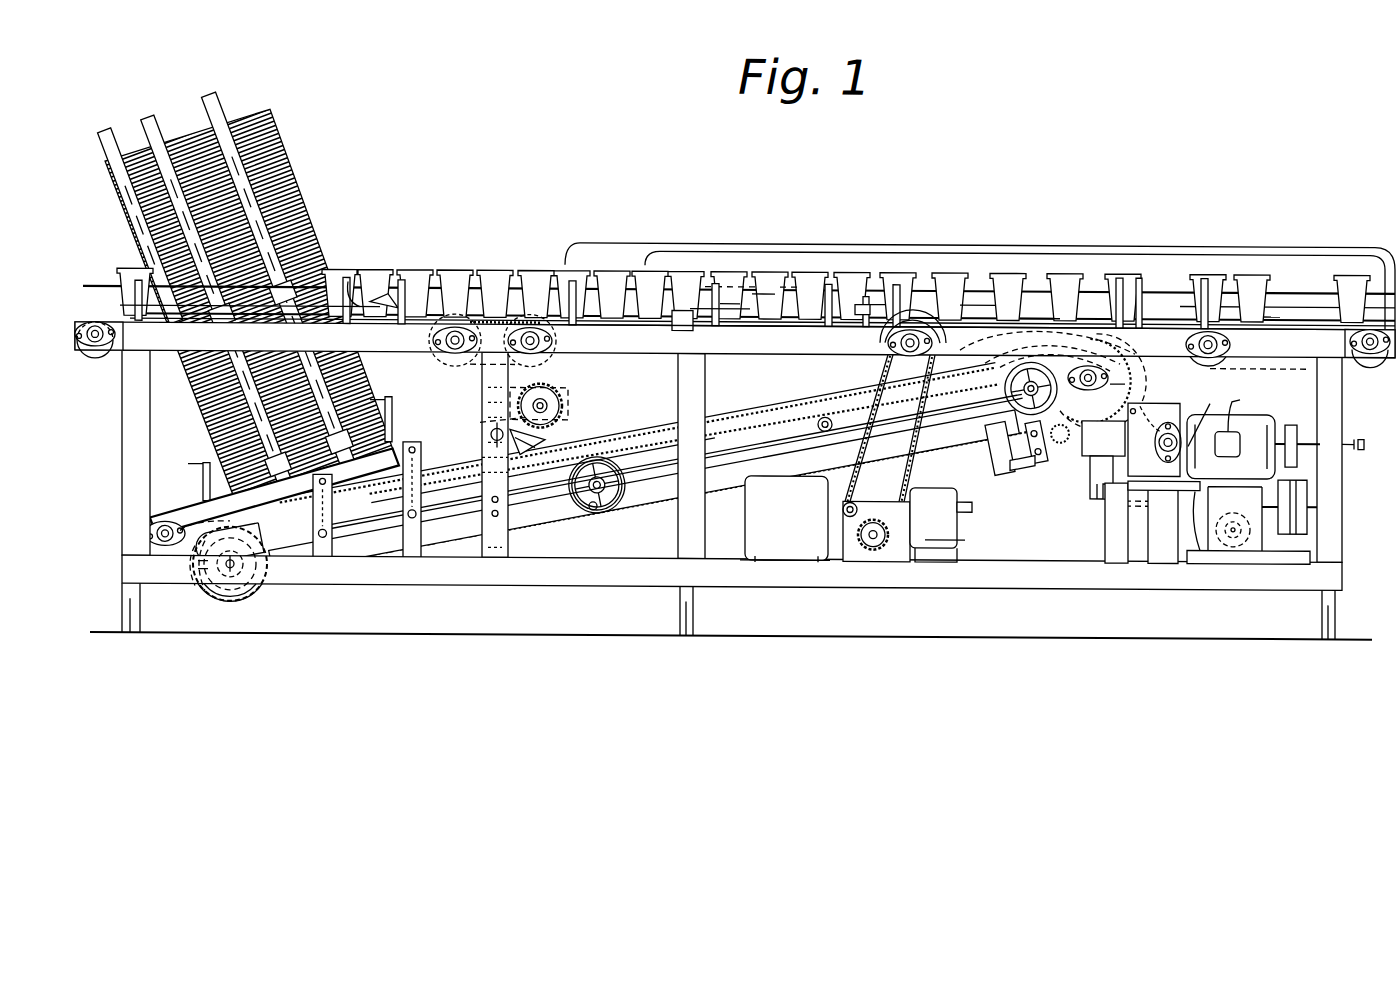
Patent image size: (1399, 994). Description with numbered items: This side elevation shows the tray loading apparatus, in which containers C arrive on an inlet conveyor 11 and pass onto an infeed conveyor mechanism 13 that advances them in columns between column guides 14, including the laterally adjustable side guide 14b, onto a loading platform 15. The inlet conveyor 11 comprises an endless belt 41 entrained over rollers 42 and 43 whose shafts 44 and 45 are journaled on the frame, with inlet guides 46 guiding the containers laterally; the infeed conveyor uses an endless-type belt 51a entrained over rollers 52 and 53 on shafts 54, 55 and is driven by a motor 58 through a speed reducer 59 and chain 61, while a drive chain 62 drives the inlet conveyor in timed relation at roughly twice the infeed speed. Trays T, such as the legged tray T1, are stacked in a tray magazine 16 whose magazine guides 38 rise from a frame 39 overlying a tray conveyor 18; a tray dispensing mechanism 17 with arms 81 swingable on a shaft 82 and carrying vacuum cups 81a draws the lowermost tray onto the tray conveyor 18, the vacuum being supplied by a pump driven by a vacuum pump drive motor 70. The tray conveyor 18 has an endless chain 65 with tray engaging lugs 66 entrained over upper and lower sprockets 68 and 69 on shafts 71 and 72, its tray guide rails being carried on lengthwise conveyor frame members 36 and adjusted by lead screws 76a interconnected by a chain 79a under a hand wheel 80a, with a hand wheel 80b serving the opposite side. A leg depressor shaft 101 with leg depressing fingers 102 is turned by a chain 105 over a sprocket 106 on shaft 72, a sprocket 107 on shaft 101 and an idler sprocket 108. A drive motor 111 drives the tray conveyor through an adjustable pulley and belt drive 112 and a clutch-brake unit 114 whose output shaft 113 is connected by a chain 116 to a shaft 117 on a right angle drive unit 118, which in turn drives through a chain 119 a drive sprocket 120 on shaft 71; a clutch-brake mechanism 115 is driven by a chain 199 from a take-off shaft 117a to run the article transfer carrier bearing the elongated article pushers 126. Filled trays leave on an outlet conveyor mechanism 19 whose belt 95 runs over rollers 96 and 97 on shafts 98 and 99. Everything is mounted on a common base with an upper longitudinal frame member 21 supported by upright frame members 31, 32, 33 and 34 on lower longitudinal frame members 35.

The inlet conveyor 11 is at (141, 307).
The infeed conveyor mechanism 13 is at (630, 328).
The column guides 14 is at (772, 274).
The side guide 14b is at (808, 285).
The loading platform 15 is at (1040, 298).
The tray magazine 16 is at (193, 440).
The tray dispensing mechanism 17 is at (347, 507).
The tray conveyor 18 is at (808, 384).
The outlet conveyor mechanism 19 is at (1306, 320).
The upper longitudinally extending frame member 21 is at (1297, 345).
The upright frame member 31 is at (1335, 476).
The upright frame member 32 is at (688, 545).
The upright frame member 33 is at (497, 560).
The upright frame member 34 is at (125, 482).
The lower longitudinal frame member 35 is at (864, 570).
The lengthwise extending conveyor frame member 36 is at (644, 491).
The magazine guides 38 is at (258, 216).
The frame 39 is at (240, 507).
The endless belt 41 is at (383, 296).
The roller 42 is at (555, 368).
The roller 43 is at (98, 352).
The shaft 44 is at (553, 338).
The shaft 45 is at (92, 330).
The inlet guides 46 is at (347, 275).
The endless-type belt 51a is at (756, 322).
The roller 52 is at (935, 338).
The roller 53 is at (462, 356).
The shaft 54 is at (888, 338).
The shaft 55 is at (432, 340).
The motor 58 is at (945, 538).
The speed reducer 59 is at (908, 535).
The chain 61 is at (915, 446).
The drive chain 62 is at (495, 315).
The endless chain 65 is at (668, 425).
The tray engaging lugs 66 is at (686, 405).
The upper sprocket 68 is at (1068, 405).
The lower sprocket 69 is at (243, 586).
The vacuum pump drive motor 70 is at (782, 545).
The shaft 71 is at (1112, 368).
The shaft 72 is at (226, 575).
The lead screws 76a is at (592, 505).
The chain 79a is at (625, 470).
The hand wheel 80a is at (598, 505).
The hand wheel 80b is at (1025, 398).
The arm 81 is at (272, 528).
The vacuum cups 81a is at (340, 500).
The shaft 82 is at (143, 530).
The belt 95 is at (1270, 318).
The roller 96 is at (1196, 352).
The roller 97 is at (1376, 352).
The shaft 98 is at (1232, 338).
The shaft 99 is at (1368, 352).
The shaft 101 is at (490, 425).
The leg depressing fingers 102 is at (546, 437).
The chain 105 is at (520, 398).
The sprocket 106 is at (192, 572).
The sprocket 107 is at (488, 460).
The idler sprocket 108 is at (548, 395).
The drive motor 111 is at (1250, 415).
The adjustable pulley and belt drive 112 is at (1307, 503).
The output shaft 113 is at (1230, 540).
The clutch-brake unit 114 is at (1250, 545).
The clutch-brake mechanism 115 is at (1103, 438).
The chain 116 is at (1200, 560).
The shaft 117 is at (1168, 415).
The take-off shaft 117a is at (1160, 485).
The right angle drive unit 118 is at (1135, 455).
The chain 119 is at (1210, 395).
The drive sprocket 120 is at (1118, 383).
The article pushers 126 is at (985, 300).
The chain 199 is at (1100, 512).
The containers C is at (424, 278).
The trays T is at (594, 440).
The tray T1 is at (1268, 310).